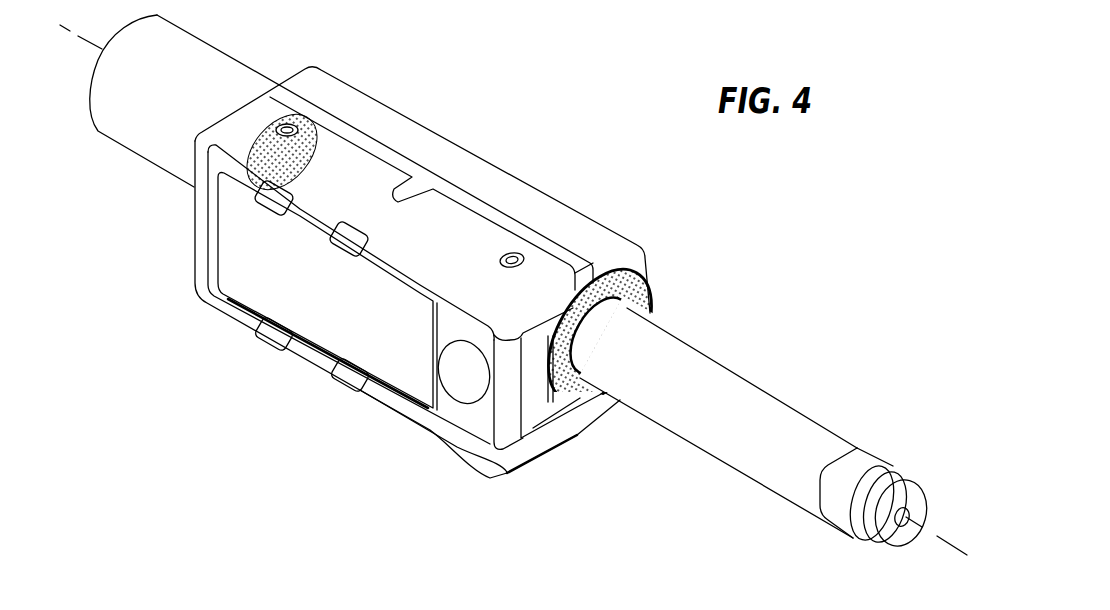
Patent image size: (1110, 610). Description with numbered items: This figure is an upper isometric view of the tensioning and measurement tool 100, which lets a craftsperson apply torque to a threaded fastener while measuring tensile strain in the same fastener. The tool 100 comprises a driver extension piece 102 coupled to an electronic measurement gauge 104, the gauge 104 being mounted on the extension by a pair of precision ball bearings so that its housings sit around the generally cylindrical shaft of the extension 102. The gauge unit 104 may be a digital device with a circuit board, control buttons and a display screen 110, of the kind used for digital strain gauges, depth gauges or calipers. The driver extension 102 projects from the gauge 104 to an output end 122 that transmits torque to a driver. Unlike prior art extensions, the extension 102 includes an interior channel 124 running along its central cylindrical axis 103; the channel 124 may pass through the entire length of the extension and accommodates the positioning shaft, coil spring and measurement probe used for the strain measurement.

The tensioning and measurement tool 100 is at (523, 104).
The driver extension piece 102 is at (697, 370).
The central cylindrical axis 103 is at (930, 535).
The electronic measurement gauge 104 is at (536, 189).
The display screen 110 is at (267, 277).
The output end 122 is at (861, 462).
The interior channel 124 is at (903, 525).